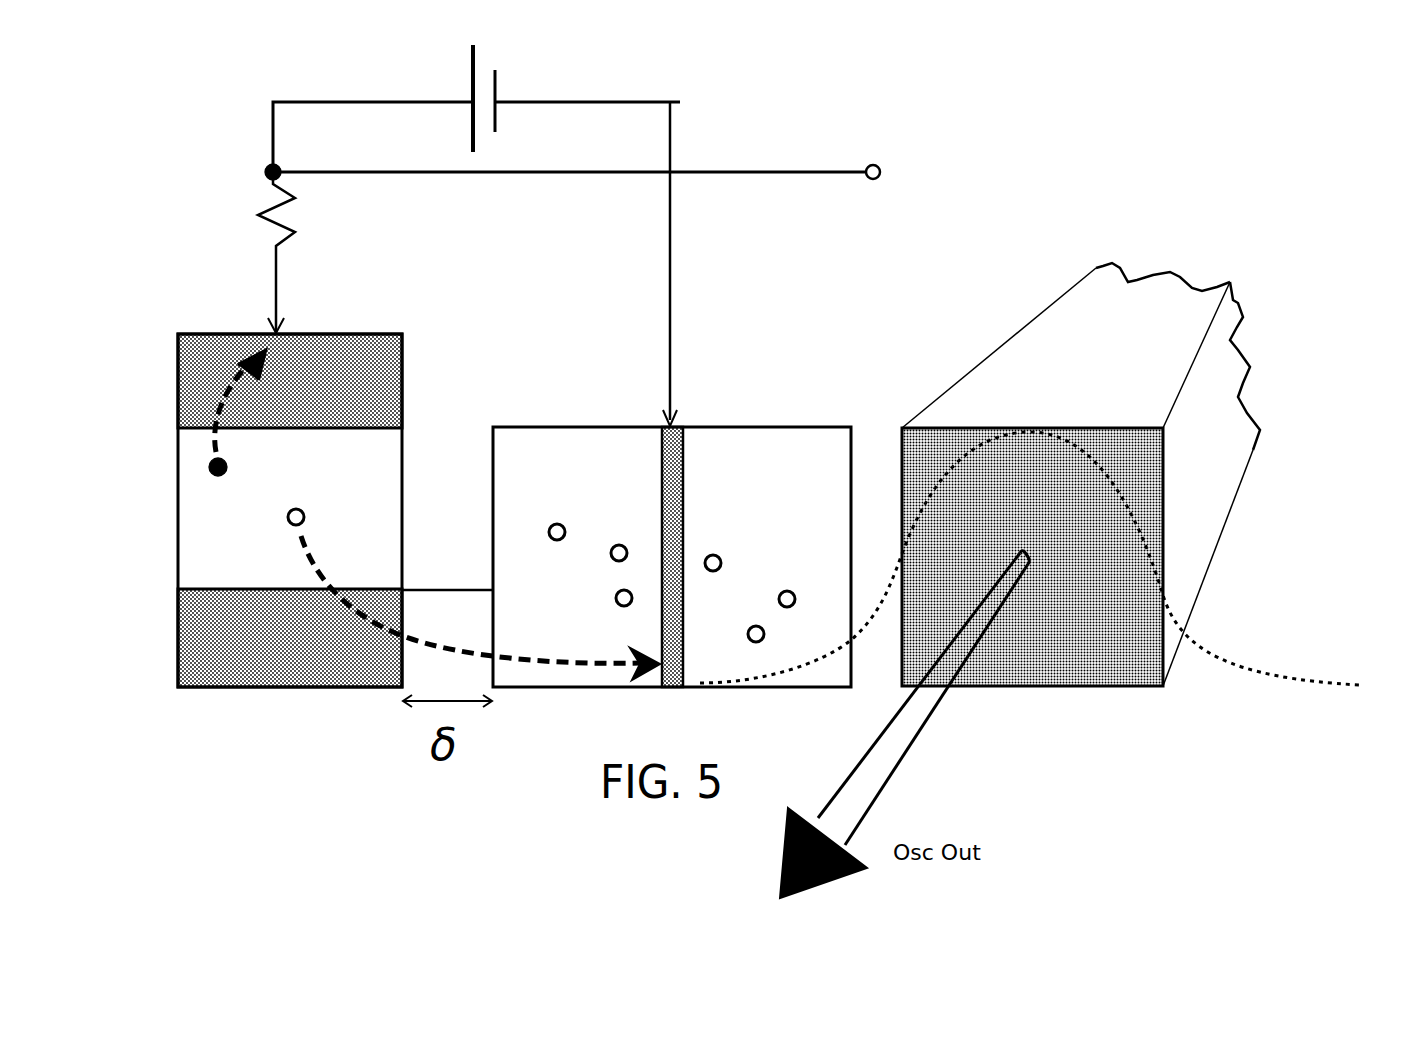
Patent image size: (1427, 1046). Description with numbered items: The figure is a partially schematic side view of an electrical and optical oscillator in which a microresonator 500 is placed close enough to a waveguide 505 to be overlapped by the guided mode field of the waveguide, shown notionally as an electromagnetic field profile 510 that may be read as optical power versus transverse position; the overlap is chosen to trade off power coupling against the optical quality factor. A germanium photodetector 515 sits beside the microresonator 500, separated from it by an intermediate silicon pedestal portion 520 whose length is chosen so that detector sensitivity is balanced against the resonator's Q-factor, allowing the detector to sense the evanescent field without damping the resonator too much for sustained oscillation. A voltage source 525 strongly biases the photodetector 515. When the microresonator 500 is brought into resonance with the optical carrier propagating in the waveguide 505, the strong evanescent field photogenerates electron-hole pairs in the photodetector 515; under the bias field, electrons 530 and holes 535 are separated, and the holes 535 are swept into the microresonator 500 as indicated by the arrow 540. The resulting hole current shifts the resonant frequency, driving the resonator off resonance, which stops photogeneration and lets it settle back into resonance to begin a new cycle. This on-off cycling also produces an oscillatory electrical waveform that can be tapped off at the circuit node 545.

The microresonator 500 is at (572, 427).
The waveguide 505 is at (1065, 342).
The electromagnetic field profile 510 is at (1210, 642).
The germanium photodetector 515 is at (403, 507).
The intermediate silicon pedestal portion 520 is at (447, 592).
The voltage source 525 is at (465, 72).
The electrons 530 is at (236, 466).
The holes 535 is at (282, 527).
The arrow 540 is at (597, 668).
The circuit node 545 is at (263, 167).